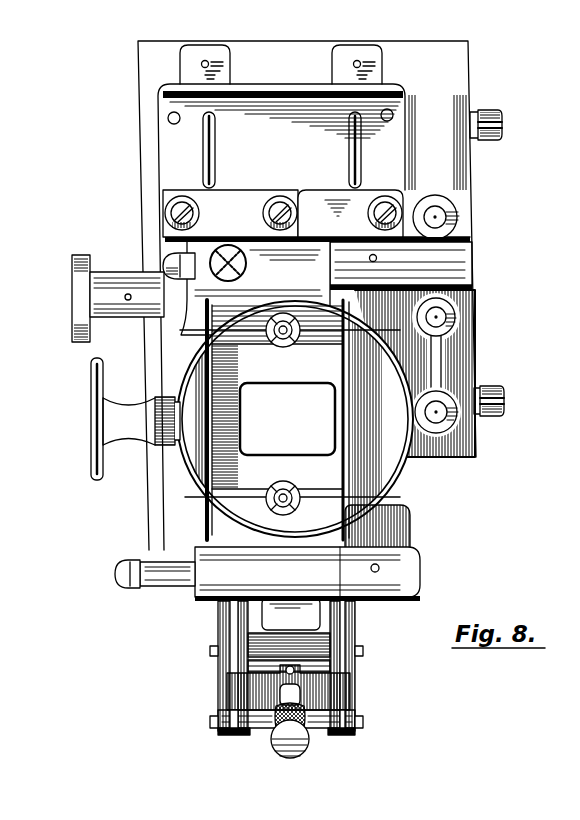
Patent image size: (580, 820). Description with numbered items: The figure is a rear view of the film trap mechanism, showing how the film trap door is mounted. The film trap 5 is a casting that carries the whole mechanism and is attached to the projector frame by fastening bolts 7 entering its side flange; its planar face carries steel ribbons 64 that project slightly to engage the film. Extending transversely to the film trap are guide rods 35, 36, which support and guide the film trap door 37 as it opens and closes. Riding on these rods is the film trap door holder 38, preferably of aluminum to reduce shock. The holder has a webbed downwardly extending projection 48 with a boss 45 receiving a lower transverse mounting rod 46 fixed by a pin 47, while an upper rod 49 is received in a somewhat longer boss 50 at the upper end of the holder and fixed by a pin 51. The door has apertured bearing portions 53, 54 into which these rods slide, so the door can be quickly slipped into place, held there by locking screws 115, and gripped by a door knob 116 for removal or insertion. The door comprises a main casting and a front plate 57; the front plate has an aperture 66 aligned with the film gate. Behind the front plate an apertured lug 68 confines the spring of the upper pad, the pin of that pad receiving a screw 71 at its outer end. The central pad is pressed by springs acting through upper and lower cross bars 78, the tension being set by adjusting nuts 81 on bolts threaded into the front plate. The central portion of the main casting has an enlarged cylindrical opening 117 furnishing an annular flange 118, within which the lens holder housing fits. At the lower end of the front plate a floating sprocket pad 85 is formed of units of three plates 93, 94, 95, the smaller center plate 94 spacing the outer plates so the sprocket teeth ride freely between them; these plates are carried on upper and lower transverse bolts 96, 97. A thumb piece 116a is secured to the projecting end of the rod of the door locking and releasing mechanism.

The film trap 5 is at (466, 41).
The fastening bolts 7 is at (503, 118).
The upper guide rod 35 is at (458, 218).
The lower guide rod 36 is at (450, 420).
The film trap door 37 is at (258, 190).
The film trap door holder 38 is at (456, 300).
The boss 45 is at (410, 566).
The lower transverse mounting rod 46 is at (114, 576).
The pin 47 is at (380, 571).
The downwardly extending projection 48 is at (405, 492).
The upper rod 49 is at (162, 266).
The boss 50 is at (473, 257).
The pin 51 is at (377, 259).
The apertured bearing portion 53 is at (255, 288).
The apertured bearing portion 54 is at (307, 574).
The front plate 57 is at (172, 150).
The ribbons 64 is at (205, 48).
The aperture / extended face member 66 is at (287, 419).
The apertured lug 68 is at (262, 222).
The screw 71 is at (300, 190).
The cross bars 78 is at (238, 348).
The adjusting nuts 81 is at (286, 347).
The sprocket pad 85 is at (222, 688).
The plate 93 is at (226, 736).
The plate 94 is at (236, 736).
The plate 95 is at (258, 736).
The upper transverse bolt 96 is at (210, 650).
The lower transverse bolt 97 is at (210, 722).
The locking screws 115 is at (224, 281).
The door knob 116 is at (90, 466).
The thumb piece 116a is at (100, 294).
The cylindrical opening 117 is at (140, 516).
The annular flange 118 is at (215, 473).